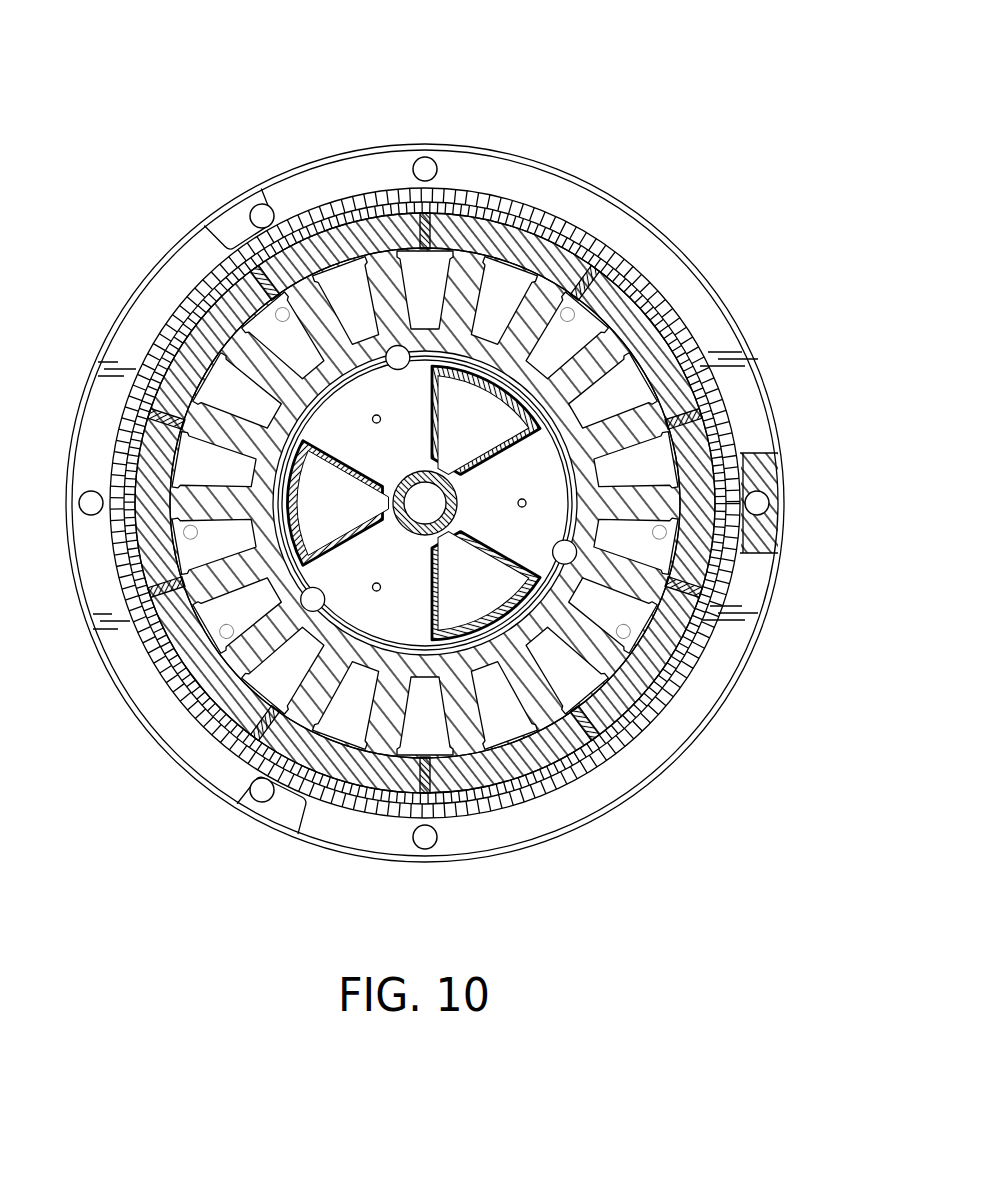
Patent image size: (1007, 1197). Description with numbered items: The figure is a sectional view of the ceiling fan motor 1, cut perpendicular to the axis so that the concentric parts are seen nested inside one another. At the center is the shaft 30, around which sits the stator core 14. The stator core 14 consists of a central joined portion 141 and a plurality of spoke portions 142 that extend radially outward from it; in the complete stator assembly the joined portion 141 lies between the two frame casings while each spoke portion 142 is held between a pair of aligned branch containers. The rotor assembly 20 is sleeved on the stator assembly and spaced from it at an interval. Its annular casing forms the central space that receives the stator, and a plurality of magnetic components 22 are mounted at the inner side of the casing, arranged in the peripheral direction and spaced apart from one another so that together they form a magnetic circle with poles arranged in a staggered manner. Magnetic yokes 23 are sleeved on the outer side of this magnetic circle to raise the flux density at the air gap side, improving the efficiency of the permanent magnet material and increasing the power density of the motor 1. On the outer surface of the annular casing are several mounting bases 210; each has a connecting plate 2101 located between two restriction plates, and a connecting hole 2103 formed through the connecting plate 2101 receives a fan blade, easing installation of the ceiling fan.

The motor 1 is at (618, 92).
The rotor assembly 20 is at (425, 481).
The mounting base 210 is at (425, 503).
The connecting plate 2101 is at (189, 221).
The connecting hole 2103 is at (424, 469).
The magnetic component 22 is at (401, 503).
The magnetic yoke 23 is at (389, 503).
The stator core 14 is at (510, 548).
The joined portion 141 is at (502, 503).
The spoke portion 142 is at (511, 503).
The shaft 30 is at (335, 674).